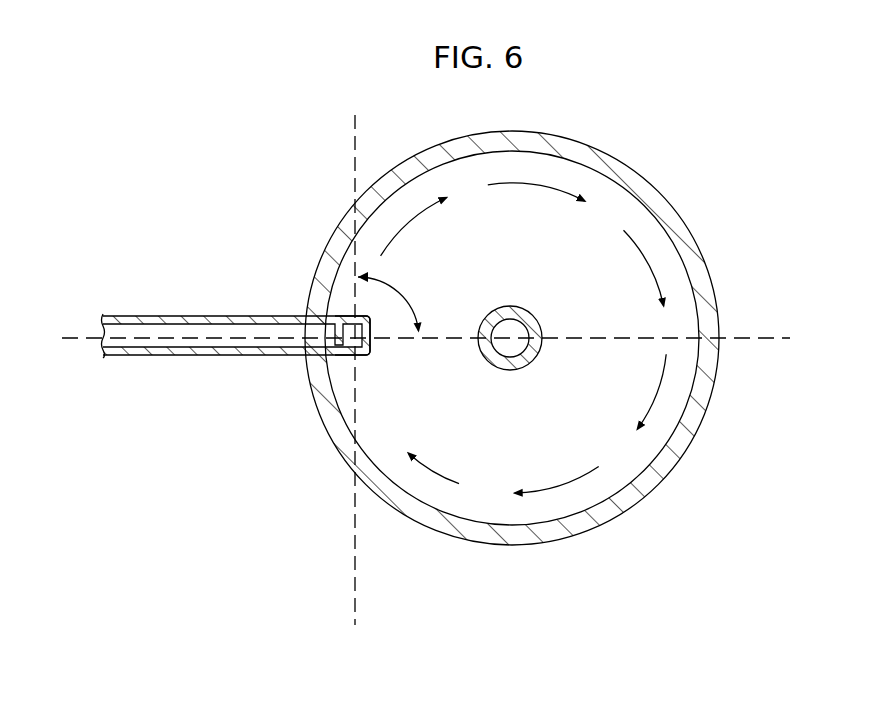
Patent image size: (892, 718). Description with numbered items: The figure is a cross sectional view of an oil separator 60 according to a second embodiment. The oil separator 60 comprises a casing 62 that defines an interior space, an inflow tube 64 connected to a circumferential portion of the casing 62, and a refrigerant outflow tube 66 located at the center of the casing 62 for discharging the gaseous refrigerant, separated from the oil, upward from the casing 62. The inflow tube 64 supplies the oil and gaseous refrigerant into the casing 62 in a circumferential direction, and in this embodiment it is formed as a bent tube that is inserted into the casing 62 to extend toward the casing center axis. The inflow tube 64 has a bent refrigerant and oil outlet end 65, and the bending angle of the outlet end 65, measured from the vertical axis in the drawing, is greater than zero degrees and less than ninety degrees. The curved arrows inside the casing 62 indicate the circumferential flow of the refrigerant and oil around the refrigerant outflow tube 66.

The oil separator 60 is at (439, 370).
The casing 62 is at (663, 463).
The inflow tube 64 is at (188, 354).
The outlet end 65 is at (350, 310).
The refrigerant outflow tube 66 is at (498, 366).